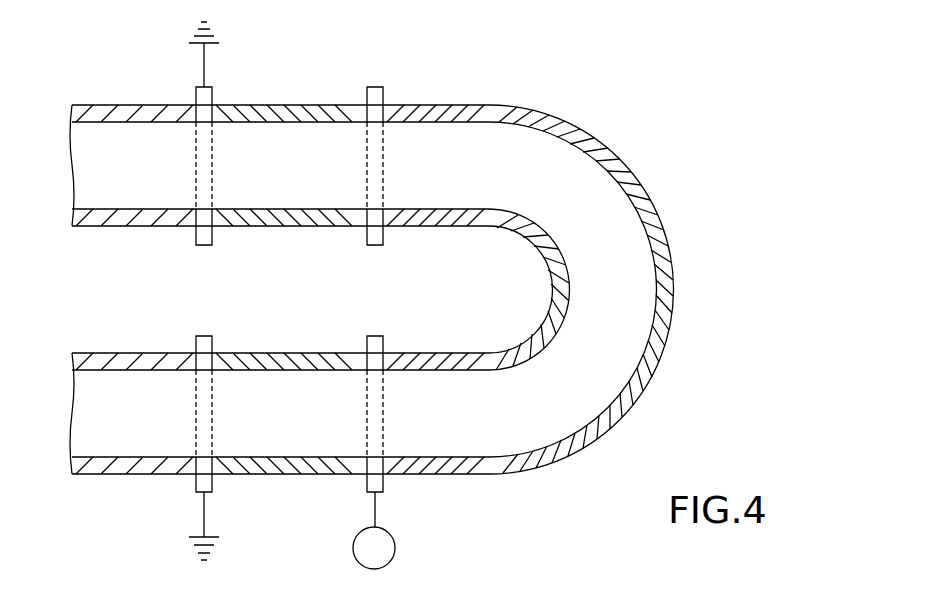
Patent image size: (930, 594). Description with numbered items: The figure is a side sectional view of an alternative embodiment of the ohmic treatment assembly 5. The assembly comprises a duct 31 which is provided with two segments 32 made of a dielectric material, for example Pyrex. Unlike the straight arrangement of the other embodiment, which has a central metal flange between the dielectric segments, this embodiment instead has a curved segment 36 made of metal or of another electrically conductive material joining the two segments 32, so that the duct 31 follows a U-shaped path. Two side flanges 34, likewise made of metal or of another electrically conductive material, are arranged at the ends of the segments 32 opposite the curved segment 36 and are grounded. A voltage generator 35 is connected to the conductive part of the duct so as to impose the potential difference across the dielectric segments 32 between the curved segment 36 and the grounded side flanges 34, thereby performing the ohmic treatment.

The ohmic treatment assembly 5 is at (429, 295).
The duct 31 is at (429, 289).
The segments 32 is at (268, 107).
The side flanges 34 is at (195, 97).
The voltage generator 35 is at (392, 545).
The curved segment 36 is at (658, 357).